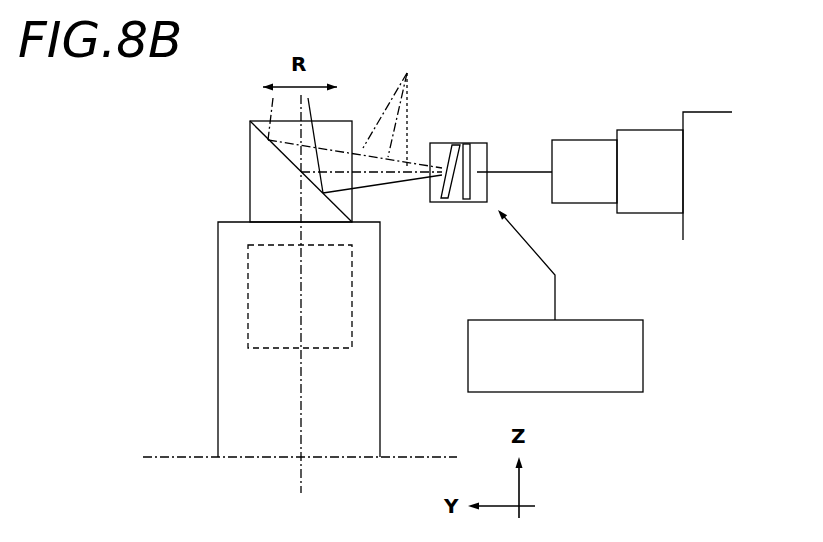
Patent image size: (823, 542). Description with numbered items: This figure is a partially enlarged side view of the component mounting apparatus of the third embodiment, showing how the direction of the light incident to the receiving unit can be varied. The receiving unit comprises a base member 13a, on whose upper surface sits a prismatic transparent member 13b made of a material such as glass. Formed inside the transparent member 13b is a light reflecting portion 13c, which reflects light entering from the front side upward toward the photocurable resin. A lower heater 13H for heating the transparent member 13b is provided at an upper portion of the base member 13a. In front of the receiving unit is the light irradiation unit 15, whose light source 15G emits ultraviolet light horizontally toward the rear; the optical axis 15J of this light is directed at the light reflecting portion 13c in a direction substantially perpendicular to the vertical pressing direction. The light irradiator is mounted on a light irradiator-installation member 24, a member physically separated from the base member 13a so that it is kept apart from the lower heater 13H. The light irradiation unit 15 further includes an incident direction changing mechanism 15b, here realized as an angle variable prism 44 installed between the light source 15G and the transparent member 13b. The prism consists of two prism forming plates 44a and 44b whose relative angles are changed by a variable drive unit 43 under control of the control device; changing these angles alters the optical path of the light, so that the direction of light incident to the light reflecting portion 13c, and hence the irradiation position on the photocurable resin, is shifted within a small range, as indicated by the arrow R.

The base member 13a is at (233, 390).
The transparent member 13b is at (337, 125).
The light reflecting portion 13c is at (226, 177).
The lower heater 13H is at (260, 292).
The light irradiation unit 15 is at (651, 218).
The incident direction changing mechanism 15b is at (500, 141).
The light source 15G is at (577, 200).
The optical axis 15J is at (395, 109).
The light irradiator-installation member 24 is at (708, 123).
The variable drive unit 43 is at (643, 355).
The angle variable prism 44 is at (480, 148).
The prism forming plate 44a is at (445, 198).
The prism forming plate 44b is at (468, 200).